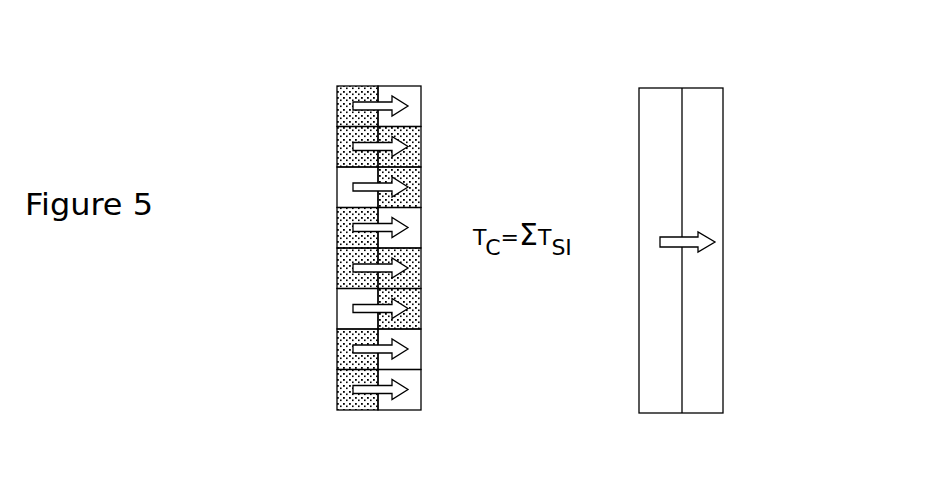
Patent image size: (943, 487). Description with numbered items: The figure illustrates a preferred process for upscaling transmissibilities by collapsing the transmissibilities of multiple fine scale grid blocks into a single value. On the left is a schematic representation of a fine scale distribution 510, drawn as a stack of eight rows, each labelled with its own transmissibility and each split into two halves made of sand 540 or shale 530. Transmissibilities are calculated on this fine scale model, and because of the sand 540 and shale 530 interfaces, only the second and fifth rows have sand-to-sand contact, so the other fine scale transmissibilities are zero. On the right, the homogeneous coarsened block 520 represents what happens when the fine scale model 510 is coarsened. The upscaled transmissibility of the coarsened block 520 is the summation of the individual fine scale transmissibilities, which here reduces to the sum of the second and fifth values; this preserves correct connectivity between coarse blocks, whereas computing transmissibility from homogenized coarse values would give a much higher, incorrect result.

The fine scale distribution 510 is at (253, 85).
The homogeneous coarsened block 520 is at (627, 87).
The shale 530 is at (398, 91).
The sand 540 is at (357, 91).